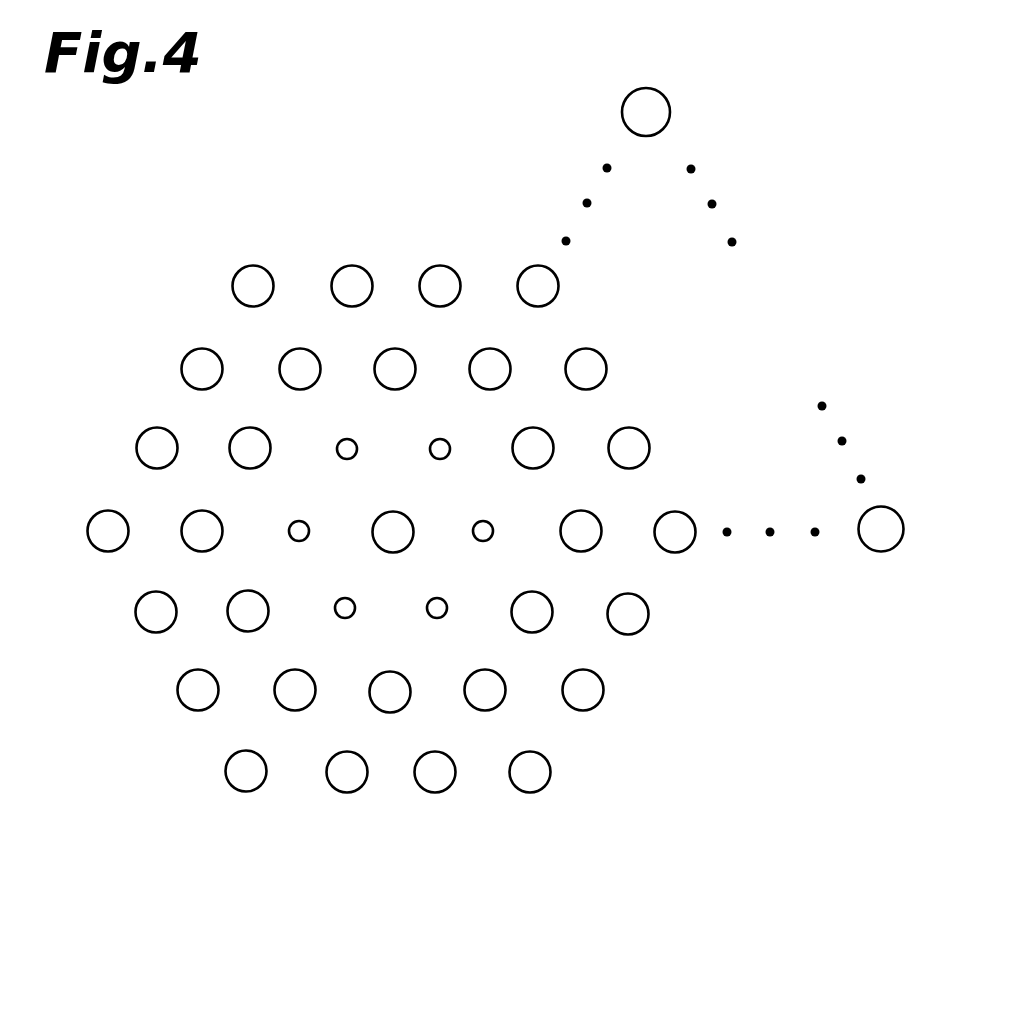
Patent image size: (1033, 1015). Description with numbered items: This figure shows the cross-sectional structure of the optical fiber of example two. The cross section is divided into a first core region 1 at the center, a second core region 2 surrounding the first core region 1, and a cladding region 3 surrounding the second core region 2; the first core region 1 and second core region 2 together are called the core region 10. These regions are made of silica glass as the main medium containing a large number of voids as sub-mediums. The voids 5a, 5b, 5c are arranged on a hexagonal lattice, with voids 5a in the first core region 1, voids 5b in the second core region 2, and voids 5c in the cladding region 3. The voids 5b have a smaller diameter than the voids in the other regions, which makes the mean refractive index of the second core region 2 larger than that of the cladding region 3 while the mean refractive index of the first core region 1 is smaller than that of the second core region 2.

The void 5a is at (413, 523).
The void 5b is at (490, 522).
The void 5c is at (601, 524).
The first core region 1 is at (397, 572).
The second core region 2 is at (463, 592).
The cladding region 3 is at (620, 573).
The core region 10 is at (689, 895).